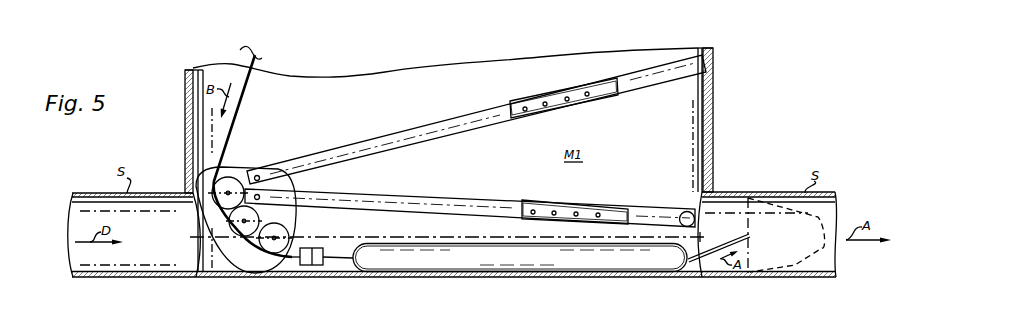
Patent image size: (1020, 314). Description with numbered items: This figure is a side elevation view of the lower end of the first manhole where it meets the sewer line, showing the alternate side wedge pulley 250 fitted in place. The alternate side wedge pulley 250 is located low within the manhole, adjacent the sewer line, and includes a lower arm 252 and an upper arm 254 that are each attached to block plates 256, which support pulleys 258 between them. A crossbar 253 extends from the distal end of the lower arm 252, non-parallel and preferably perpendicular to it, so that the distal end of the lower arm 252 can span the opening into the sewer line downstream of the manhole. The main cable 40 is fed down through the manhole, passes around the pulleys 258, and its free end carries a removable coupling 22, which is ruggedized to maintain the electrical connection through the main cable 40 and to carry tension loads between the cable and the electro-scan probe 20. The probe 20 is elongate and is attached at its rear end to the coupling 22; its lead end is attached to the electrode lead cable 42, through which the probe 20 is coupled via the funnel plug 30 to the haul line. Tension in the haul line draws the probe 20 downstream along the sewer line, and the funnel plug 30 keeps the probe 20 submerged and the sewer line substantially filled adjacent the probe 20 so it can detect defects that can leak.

The electro-scan probe 20 is at (480, 265).
The removable coupling 22 is at (313, 266).
The funnel plug 30 is at (797, 267).
The main cable 40 is at (233, 128).
The electrode lead cable 42 is at (693, 270).
The alternate side wedge pulley 250 is at (632, 146).
The lower arm 252 is at (432, 203).
The crossbar 253 is at (684, 212).
The upper arm 254 is at (383, 138).
The block plates 256 is at (247, 258).
The pulleys 258 is at (219, 191).